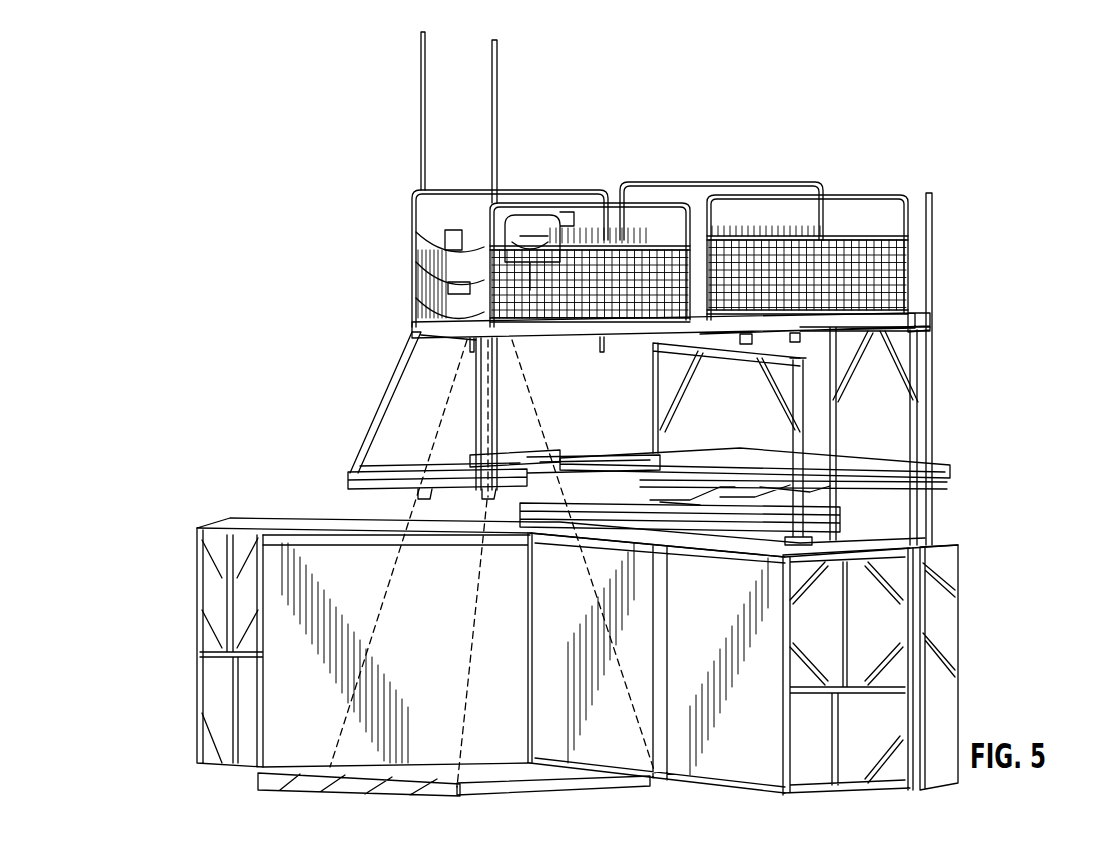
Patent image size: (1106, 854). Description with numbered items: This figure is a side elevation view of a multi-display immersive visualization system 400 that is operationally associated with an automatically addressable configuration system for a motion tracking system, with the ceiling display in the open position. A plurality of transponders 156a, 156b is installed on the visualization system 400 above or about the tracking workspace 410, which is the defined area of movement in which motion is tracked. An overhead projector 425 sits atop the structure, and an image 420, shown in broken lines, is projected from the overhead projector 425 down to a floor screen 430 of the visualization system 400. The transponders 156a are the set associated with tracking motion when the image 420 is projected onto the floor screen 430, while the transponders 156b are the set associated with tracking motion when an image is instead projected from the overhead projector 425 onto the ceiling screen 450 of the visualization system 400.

The multi-display immersive visualization system 400 is at (959, 133).
The tracking workspace 410 is at (392, 716).
The image 420 is at (405, 510).
The overhead projector 425 is at (522, 215).
The floor screen 430 is at (522, 773).
The ceiling screen 450 is at (845, 528).
The transponders 156a is at (572, 465).
The transponders 156b is at (772, 507).